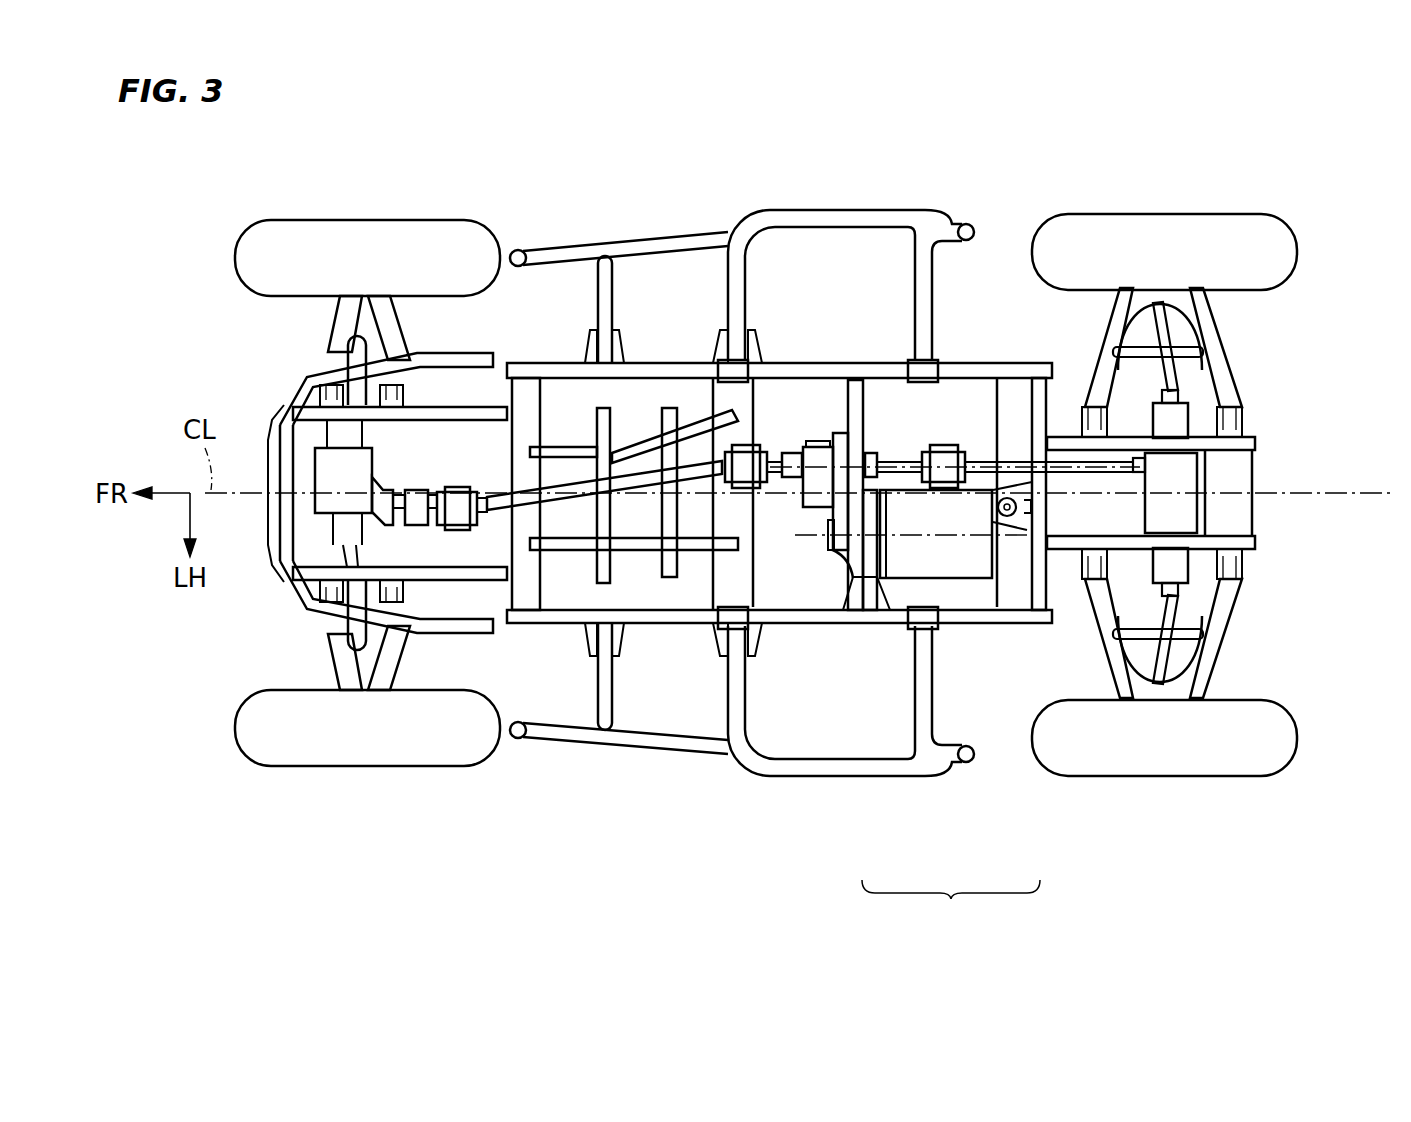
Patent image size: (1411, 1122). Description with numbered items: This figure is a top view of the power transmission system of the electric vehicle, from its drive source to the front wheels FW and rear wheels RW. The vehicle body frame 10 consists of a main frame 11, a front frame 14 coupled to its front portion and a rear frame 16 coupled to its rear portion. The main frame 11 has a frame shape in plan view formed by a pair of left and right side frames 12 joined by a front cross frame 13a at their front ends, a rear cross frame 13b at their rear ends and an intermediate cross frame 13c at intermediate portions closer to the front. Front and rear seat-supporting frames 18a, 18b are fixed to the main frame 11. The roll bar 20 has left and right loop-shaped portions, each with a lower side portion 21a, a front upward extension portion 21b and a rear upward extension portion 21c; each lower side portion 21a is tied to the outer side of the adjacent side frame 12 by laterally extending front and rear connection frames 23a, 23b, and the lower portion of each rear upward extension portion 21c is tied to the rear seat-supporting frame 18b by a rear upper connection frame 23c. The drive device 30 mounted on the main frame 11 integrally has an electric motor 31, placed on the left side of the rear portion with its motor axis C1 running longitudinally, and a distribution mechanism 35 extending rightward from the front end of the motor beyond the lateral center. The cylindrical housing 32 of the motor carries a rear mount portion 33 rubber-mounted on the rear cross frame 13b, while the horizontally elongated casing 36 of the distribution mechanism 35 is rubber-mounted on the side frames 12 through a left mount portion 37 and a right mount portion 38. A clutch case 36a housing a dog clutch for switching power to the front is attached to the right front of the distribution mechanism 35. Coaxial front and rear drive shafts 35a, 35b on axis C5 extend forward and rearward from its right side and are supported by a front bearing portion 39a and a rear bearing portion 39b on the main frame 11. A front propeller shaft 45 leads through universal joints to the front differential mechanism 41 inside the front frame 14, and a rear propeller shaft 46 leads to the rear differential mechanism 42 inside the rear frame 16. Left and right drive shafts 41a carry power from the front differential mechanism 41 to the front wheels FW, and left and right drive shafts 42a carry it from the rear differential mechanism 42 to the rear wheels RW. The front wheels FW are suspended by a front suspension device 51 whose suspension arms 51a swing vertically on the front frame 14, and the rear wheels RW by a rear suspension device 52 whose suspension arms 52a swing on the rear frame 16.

The vehicle body frame 10 is at (779, 431).
The main frame 11 is at (779, 431).
The side frames 12 is at (684, 368).
The front cross frame 13a is at (526, 390).
The rear cross frame 13b is at (1035, 400).
The intermediate cross frame 13c is at (757, 395).
The front frame 14 is at (280, 403).
The rear frame 16 is at (1270, 436).
The front seat-supporting frame 18a is at (737, 370).
The rear seat-supporting frame 18b is at (936, 372).
The roll bar 20 is at (845, 505).
The lower side portion 21a is at (805, 212).
The front upward extension portion 21b is at (516, 250).
The rear upward extension portion 21c is at (968, 226).
The front connection frame 23a is at (600, 293).
The rear connection frame 23b is at (728, 290).
The rear upper connection frame 23c is at (918, 292).
The drive device 30 is at (911, 580).
The electric motor 31 is at (971, 650).
The housing 32 is at (990, 570).
The rear mount portion 33 is at (993, 500).
The distribution mechanism 35 is at (846, 557).
The front drive shaft 35a is at (795, 487).
The rear drive shaft 35b is at (893, 462).
The casing 36 is at (836, 450).
The clutch case 36a is at (818, 440).
The left mount portion 37 is at (866, 600).
The right mount portion 38 is at (855, 420).
The front bearing portion 39a is at (743, 490).
The rear bearing portion 39b is at (945, 450).
The front differential mechanism 41 is at (368, 468).
The drive shaft 41a is at (352, 345).
The rear differential mechanism 42 is at (1190, 475).
The drive shaft 42a is at (1172, 385).
The front propeller shaft 45 is at (628, 473).
The rear propeller shaft 46 is at (1062, 465).
The front suspension device 51 is at (397, 497).
The suspension arm 51a is at (372, 323).
The rear suspension device 52 is at (1248, 487).
The suspension arm 52a is at (1208, 330).
The motor axis C1 is at (807, 540).
The axis of the front and rear drive shafts C5 is at (797, 455).
The front wheels FW is at (283, 238).
The rear wheels RW is at (1258, 220).